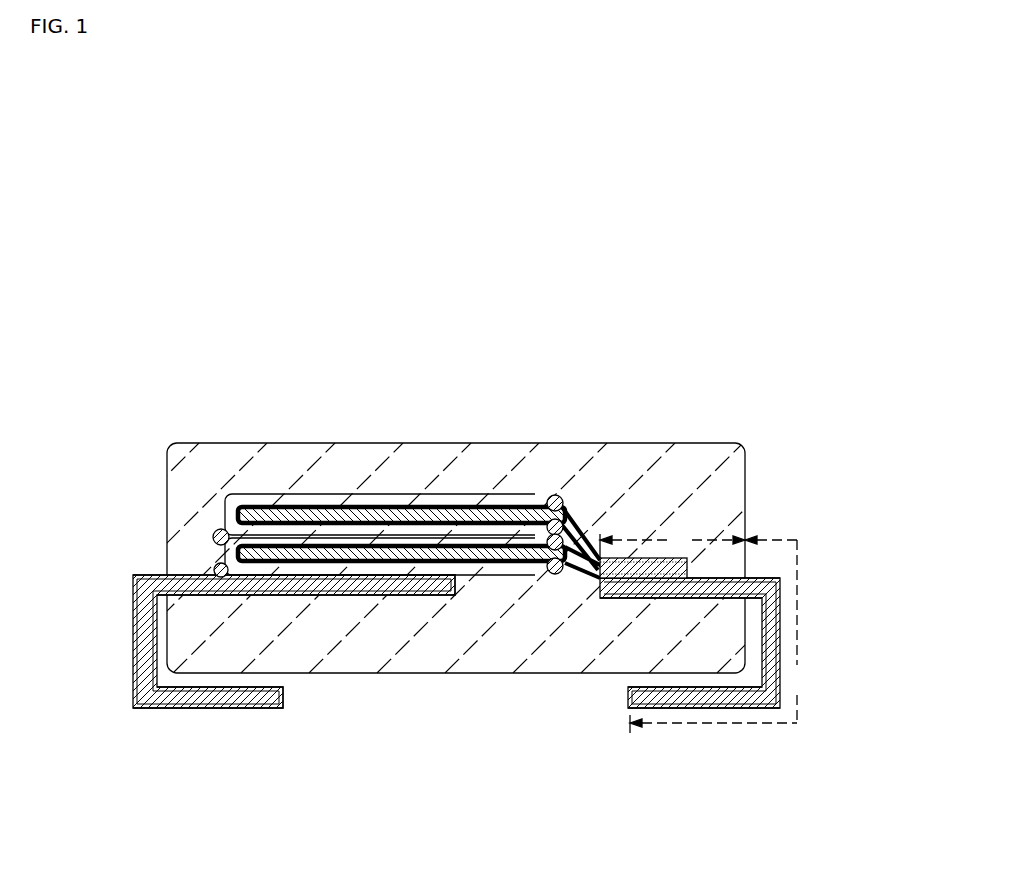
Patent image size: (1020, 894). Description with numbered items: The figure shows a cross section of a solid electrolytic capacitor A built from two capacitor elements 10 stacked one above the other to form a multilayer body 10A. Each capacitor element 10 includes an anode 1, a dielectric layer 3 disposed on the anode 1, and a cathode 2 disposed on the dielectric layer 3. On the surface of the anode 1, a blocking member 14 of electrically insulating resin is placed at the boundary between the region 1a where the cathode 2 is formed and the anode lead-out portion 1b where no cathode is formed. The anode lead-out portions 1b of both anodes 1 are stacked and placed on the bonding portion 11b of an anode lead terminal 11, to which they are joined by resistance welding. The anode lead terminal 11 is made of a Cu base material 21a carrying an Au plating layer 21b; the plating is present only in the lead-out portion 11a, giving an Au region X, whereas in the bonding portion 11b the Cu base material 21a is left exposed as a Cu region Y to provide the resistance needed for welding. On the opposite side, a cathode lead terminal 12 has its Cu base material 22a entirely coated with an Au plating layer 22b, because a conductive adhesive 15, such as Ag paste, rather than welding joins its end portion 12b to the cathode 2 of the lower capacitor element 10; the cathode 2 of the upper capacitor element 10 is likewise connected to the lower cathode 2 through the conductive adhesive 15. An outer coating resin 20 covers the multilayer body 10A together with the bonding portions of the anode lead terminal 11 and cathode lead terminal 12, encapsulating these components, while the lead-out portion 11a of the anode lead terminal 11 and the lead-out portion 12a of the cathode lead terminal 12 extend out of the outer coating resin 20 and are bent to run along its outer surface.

The solid electrolytic capacitor A is at (473, 558).
The anode 1 is at (395, 430).
The region where the cathode is to be formed 1a is at (366, 530).
The anode lead-out portion 1b is at (647, 546).
The cathode 2 is at (427, 557).
The dielectric layer 3 is at (476, 530).
The capacitor element 10 is at (395, 449).
The multilayer body 10A is at (390, 530).
The anode lead terminal 11 is at (721, 619).
The lead-out portion of the anode lead terminal 11a is at (700, 710).
The bonding portion of the anode lead terminal 11b is at (631, 610).
The cathode lead terminal 12 is at (246, 662).
The lead-out portion of the cathode lead terminal 12a is at (197, 710).
The end portion of the cathode lead terminal 12b is at (347, 597).
The blocking member 14 is at (555, 495).
The conductive adhesive 15 is at (214, 533).
The outer coating resin 20 is at (433, 675).
The Cu base material of the anode lead terminal 21a is at (779, 588).
The Au plating layer of the anode lead terminal 21b is at (782, 627).
The Cu base material of the cathode lead terminal 22a is at (135, 615).
The Au plating layer of the cathode lead terminal 22b is at (133, 658).
The Au region X is at (717, 636).
The Cu region Y is at (698, 542).